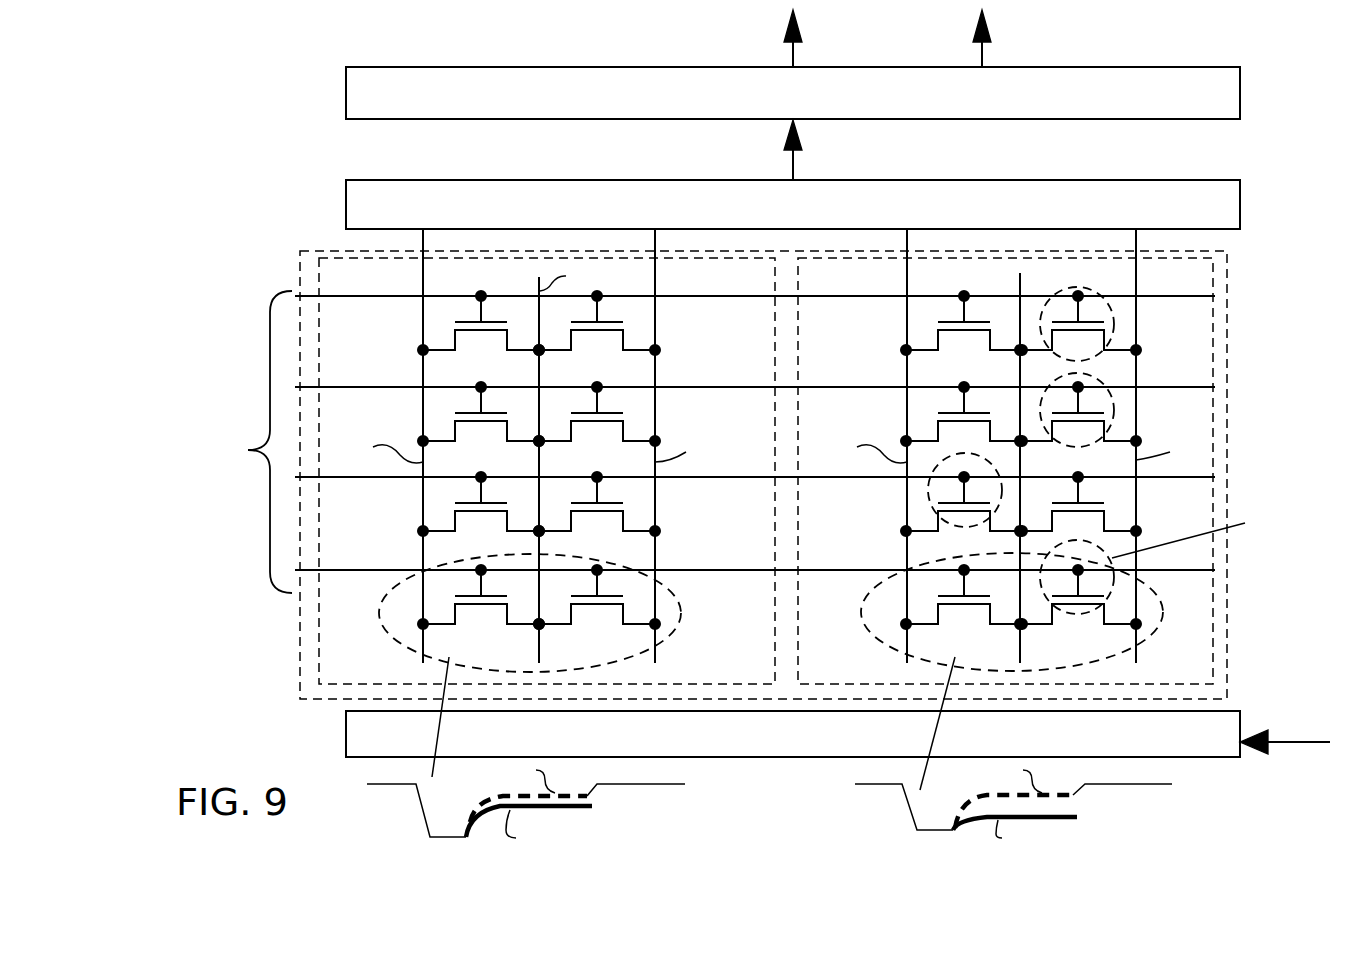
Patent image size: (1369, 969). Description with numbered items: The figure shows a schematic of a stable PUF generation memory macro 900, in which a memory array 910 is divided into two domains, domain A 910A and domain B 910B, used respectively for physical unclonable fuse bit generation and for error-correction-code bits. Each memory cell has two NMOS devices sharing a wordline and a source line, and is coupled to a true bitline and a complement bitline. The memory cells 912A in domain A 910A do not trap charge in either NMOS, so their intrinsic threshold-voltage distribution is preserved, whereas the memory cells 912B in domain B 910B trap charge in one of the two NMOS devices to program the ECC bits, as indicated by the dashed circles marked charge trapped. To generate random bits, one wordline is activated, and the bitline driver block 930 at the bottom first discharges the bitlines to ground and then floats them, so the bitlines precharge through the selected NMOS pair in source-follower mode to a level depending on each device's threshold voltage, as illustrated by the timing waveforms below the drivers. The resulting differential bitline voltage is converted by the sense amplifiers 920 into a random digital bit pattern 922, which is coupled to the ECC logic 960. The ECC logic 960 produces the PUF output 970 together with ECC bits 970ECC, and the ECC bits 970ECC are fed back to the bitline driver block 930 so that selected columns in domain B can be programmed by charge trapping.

The stable PUF generation memory macro (SPUFMACRO) 900 is at (1297, 75).
The memory array 910 is at (315, 250).
The domain A 910A is at (459, 478).
The domain B 910B is at (1078, 500).
The memory cells in domain A 912A is at (511, 655).
The memory cells in domain B 912B is at (993, 662).
The sense amplifiers 920 is at (793, 204).
The random digital bit pattern (generated bits) 922 is at (793, 166).
The bitline driver block 930 is at (793, 734).
The ECC logic 960 is at (793, 93).
The PUF output bits 970 is at (793, 58).
The ECC bits 970ECC is at (982, 58).